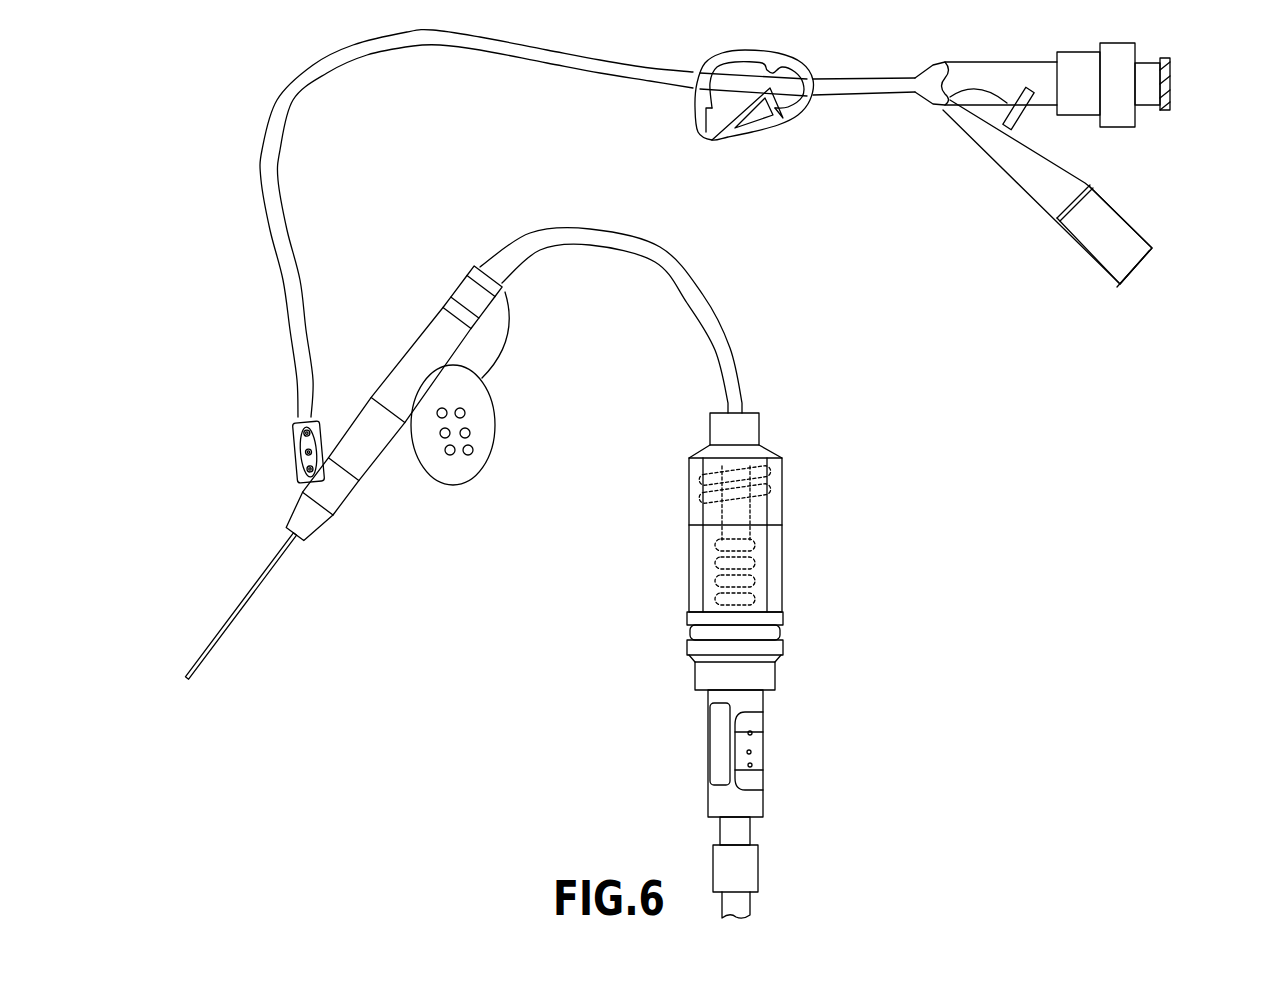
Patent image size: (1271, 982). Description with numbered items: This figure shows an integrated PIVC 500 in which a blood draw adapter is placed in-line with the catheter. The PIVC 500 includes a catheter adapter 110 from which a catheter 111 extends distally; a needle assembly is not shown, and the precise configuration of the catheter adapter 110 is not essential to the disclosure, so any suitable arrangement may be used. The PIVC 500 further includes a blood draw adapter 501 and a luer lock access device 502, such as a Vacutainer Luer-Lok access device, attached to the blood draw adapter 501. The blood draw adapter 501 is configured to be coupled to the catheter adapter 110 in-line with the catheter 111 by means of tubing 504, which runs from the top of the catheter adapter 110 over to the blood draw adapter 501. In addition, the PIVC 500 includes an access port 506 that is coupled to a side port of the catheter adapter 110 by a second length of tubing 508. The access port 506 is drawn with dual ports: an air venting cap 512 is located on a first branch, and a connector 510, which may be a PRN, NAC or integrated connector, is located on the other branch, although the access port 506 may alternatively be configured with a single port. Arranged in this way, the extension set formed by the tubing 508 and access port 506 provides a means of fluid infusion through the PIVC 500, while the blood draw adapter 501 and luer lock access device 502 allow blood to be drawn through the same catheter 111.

The PIVC 500 is at (227, 242).
The catheter adapter 110 is at (396, 466).
The catheter 111 is at (219, 641).
The tubing 508 is at (290, 99).
The tubing 504 is at (550, 232).
The blood draw adapter 501 is at (778, 673).
The luer lock access device 502 is at (766, 898).
The access port 506 is at (1003, 50).
The connector 510 is at (1172, 80).
The air venting cap 512 is at (1110, 258).